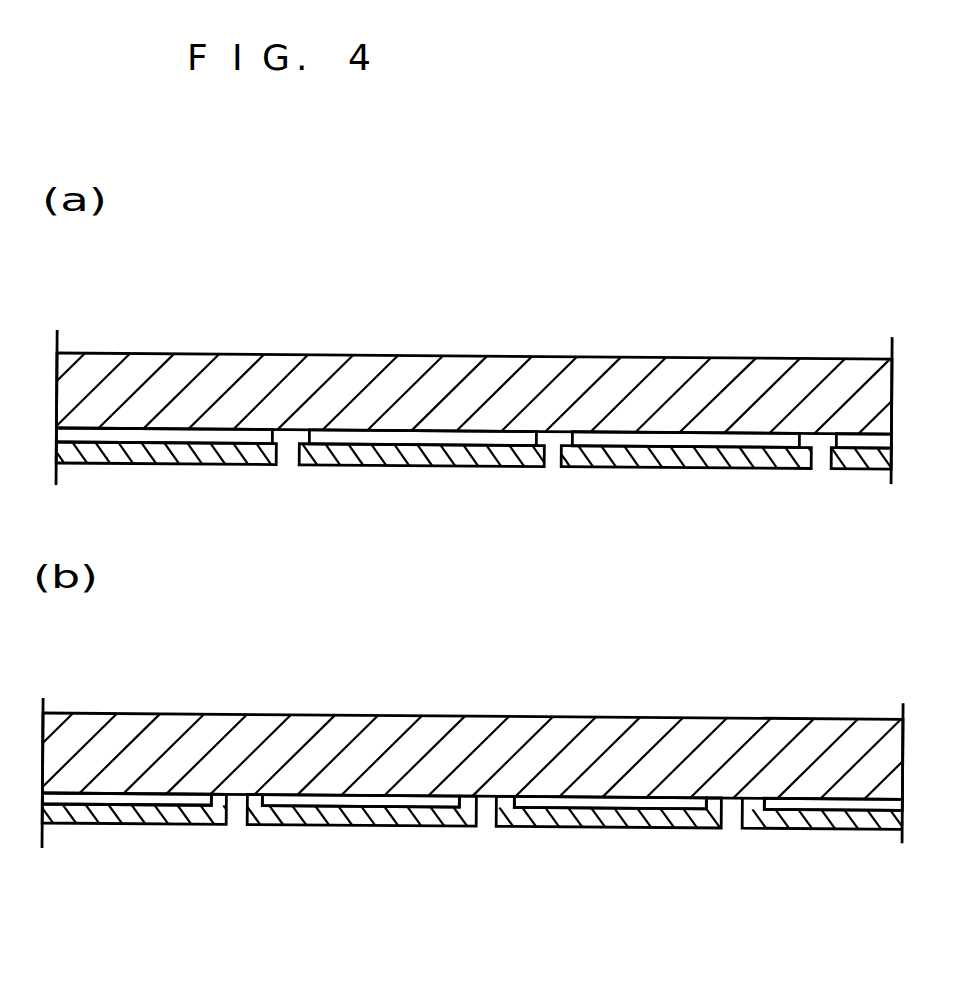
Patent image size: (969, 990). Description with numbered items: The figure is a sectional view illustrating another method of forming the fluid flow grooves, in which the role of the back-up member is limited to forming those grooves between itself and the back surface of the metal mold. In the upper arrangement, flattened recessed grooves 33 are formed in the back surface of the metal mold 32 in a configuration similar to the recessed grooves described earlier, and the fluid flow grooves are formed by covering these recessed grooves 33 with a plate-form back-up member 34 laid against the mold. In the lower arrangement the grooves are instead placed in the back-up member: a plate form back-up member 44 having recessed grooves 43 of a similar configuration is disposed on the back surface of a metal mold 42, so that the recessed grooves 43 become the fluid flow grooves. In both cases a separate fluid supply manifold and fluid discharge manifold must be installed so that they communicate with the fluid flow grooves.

The metal mold 32 is at (453, 374).
The recessed grooves 33 is at (175, 437).
The plate-form back-up member 34 is at (228, 459).
The metal mold 42 is at (462, 745).
The recessed grooves 43 is at (143, 799).
The plate form back-up member 44 is at (172, 819).